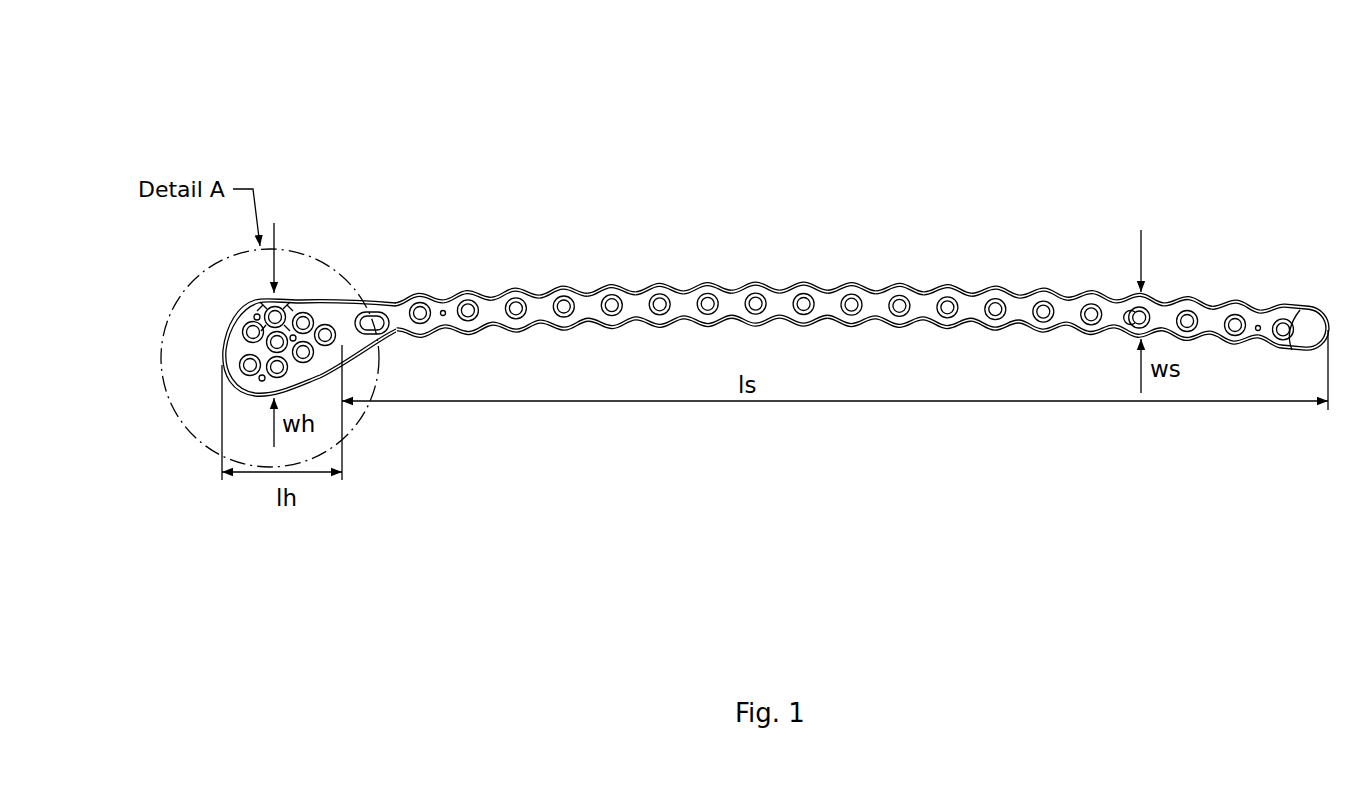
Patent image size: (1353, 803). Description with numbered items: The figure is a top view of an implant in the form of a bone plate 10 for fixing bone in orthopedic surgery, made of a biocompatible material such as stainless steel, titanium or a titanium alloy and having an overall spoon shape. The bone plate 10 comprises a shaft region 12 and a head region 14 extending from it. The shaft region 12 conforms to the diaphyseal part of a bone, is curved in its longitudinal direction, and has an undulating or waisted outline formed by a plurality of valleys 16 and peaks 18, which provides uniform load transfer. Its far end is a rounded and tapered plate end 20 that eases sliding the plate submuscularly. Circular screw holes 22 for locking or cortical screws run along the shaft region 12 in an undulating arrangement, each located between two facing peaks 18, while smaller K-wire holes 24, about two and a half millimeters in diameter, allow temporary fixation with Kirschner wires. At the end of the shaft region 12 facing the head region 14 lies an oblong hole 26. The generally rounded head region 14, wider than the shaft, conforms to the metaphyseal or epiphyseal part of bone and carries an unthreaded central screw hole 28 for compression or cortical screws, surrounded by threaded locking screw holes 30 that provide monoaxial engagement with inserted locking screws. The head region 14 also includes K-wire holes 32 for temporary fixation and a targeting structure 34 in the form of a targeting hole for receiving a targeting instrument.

The bone plate 10 is at (1160, 128).
The shaft region 12 is at (733, 303).
The head region 14 is at (347, 305).
The valleys 16 is at (973, 290).
The peaks 18 is at (900, 283).
The plate end 20 is at (1313, 334).
The circular screw holes 22 is at (657, 300).
The K-wire holes 24 is at (1258, 326).
The oblong hole 26 is at (372, 320).
The central screw hole 28 is at (252, 318).
The locking screw holes 30 is at (252, 332).
The K-wire holes 32 is at (303, 323).
The targeting structure 34 is at (288, 303).